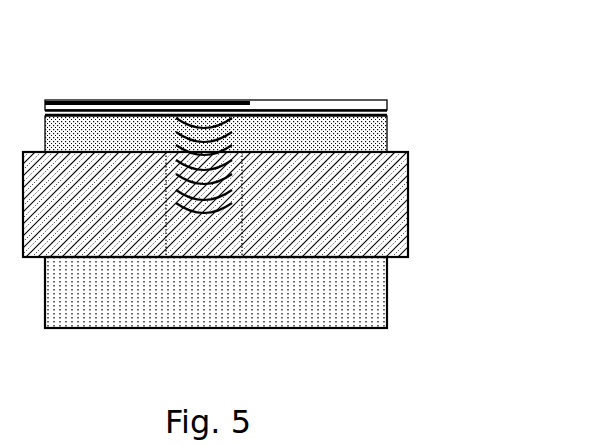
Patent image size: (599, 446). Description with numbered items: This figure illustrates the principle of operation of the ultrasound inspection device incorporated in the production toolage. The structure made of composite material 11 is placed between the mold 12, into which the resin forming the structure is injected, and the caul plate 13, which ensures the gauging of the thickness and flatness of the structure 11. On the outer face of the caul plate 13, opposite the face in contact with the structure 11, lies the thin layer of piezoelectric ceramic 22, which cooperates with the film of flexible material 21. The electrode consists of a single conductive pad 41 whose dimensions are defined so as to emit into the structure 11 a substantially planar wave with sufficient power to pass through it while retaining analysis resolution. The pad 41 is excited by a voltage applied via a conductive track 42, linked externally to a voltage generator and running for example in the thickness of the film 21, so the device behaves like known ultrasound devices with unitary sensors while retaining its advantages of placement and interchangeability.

The structure made of composite material 11 is at (402, 192).
The mold 12 is at (380, 301).
The caul plate 13 is at (384, 133).
The film of flexible material 21 is at (358, 105).
The layer of piezoelectric ceramic 22 is at (281, 111).
The conductive pad 41 is at (218, 100).
The conductive track 42 is at (110, 101).